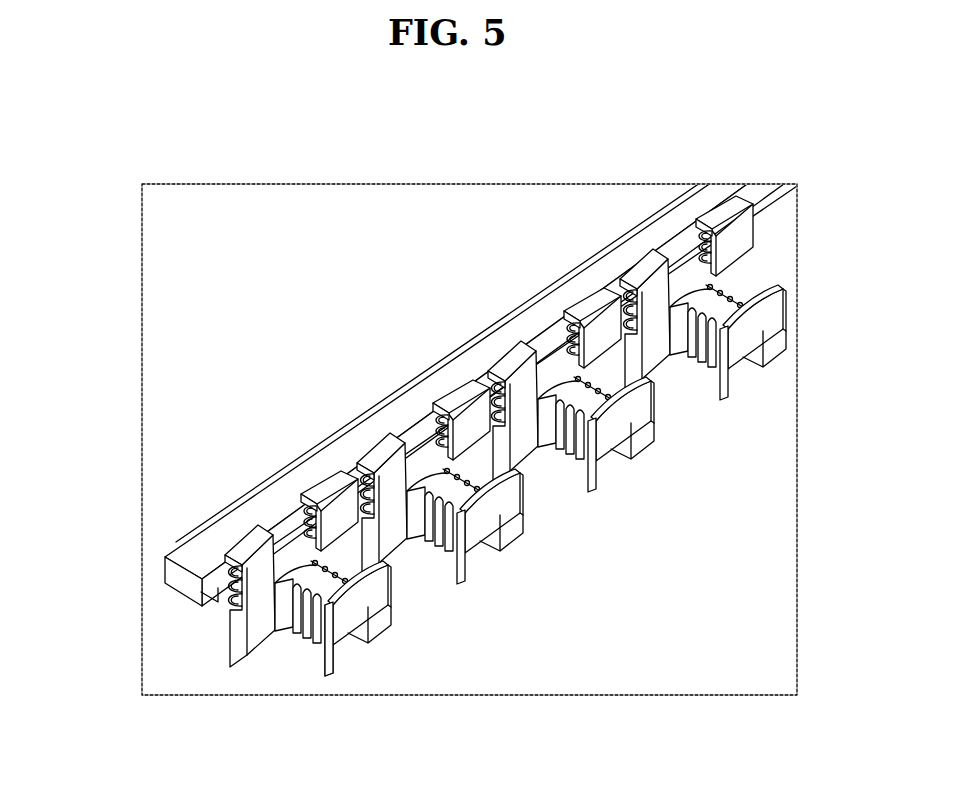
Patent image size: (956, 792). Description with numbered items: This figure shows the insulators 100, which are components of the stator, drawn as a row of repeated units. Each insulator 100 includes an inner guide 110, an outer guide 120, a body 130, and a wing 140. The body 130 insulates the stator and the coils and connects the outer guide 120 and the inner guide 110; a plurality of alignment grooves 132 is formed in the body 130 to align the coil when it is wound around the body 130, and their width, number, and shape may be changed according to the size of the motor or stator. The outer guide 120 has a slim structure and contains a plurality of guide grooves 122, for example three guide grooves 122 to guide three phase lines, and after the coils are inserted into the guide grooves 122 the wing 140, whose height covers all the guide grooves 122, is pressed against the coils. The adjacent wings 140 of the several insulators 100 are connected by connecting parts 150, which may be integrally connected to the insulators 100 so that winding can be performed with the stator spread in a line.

The insulator 100 is at (129, 203).
The inner guide 110 is at (355, 605).
The outer guide 120 is at (597, 303).
The guide groove 122 is at (223, 573).
The body 130 is at (320, 583).
The alignment groove 132 is at (325, 622).
The wing 140 is at (484, 362).
The connecting part 150 is at (283, 464).